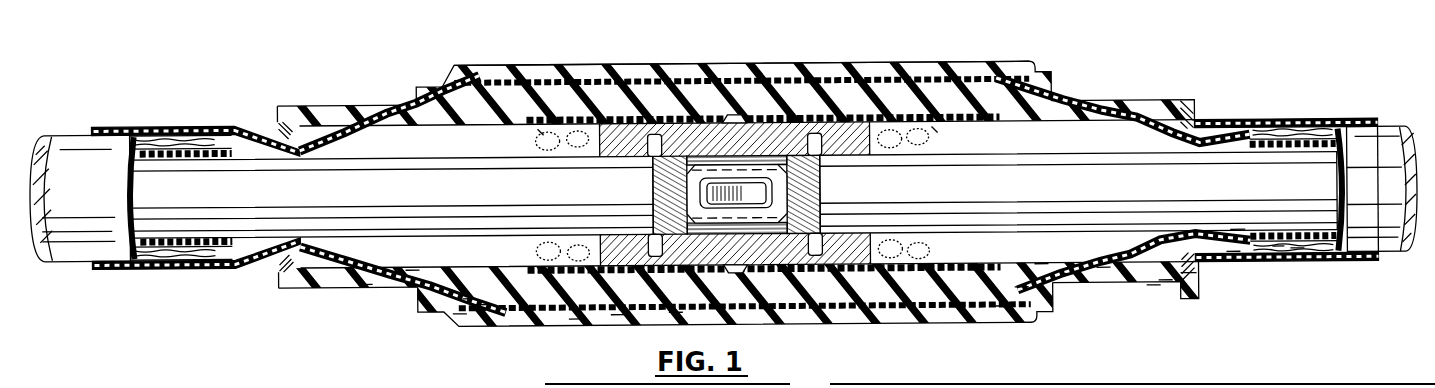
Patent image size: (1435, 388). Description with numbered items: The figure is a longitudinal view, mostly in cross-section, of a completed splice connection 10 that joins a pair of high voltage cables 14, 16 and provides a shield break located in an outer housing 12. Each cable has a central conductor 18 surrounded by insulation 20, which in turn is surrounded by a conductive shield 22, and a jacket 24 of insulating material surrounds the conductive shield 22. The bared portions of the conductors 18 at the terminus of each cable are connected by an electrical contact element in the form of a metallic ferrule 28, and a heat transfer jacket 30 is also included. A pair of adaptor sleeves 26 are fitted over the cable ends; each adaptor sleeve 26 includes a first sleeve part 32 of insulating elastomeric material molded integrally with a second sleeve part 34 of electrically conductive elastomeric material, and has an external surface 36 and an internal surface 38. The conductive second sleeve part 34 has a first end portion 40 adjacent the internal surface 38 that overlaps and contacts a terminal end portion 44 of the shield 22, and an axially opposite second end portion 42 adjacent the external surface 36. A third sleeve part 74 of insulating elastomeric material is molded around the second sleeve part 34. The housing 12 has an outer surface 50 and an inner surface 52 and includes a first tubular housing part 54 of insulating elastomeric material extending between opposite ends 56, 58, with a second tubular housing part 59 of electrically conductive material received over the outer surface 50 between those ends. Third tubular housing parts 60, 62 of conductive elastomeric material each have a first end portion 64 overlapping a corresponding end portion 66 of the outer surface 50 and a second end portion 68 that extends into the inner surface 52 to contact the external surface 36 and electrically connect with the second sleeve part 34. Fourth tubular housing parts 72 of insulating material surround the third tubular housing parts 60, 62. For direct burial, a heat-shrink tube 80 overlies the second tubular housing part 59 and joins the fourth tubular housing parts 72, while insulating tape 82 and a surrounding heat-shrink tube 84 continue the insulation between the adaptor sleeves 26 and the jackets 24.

The splice connection 10 is at (682, 60).
The outer housing 12 is at (566, 92).
The high voltage cable 14 is at (160, 253).
The high voltage cable 16 is at (1395, 135).
The central conductor 18 is at (655, 190).
The insulation 20 is at (184, 165).
The conductive shield 22 is at (199, 250).
The jacket 24 is at (72, 160).
The adaptor sleeve 26 is at (319, 114).
The metallic ferrule 28 is at (727, 182).
The heat transfer jacket 30 is at (685, 133).
The first sleeve part 32 is at (538, 128).
The second sleeve part 34 is at (363, 138).
The external surface 36 is at (459, 118).
The internal surface 38 is at (445, 158).
The first end portion 40 is at (1236, 233).
The second end portion 42 is at (1102, 270).
The terminal end portion 44 is at (1233, 255).
The outer surface 50 is at (598, 80).
The inner surface 52 is at (521, 123).
The first tubular housing part 54 is at (617, 314).
The end 56 is at (412, 268).
The end 58 is at (1052, 252).
The second tubular housing part 59 is at (675, 312).
The third tubular housing part 60 is at (468, 297).
The third tubular housing part 62 is at (1066, 276).
The first end portion 64 is at (480, 303).
The end portion 66 is at (458, 312).
The second end portion 68 is at (365, 282).
The fourth tubular housing part 72 is at (1165, 283).
The third sleeve part 74 is at (1186, 280).
The heat-shrink tube 80 is at (575, 318).
The insulating tape 82 is at (1296, 252).
The heat-shrink tube 84 is at (1278, 250).